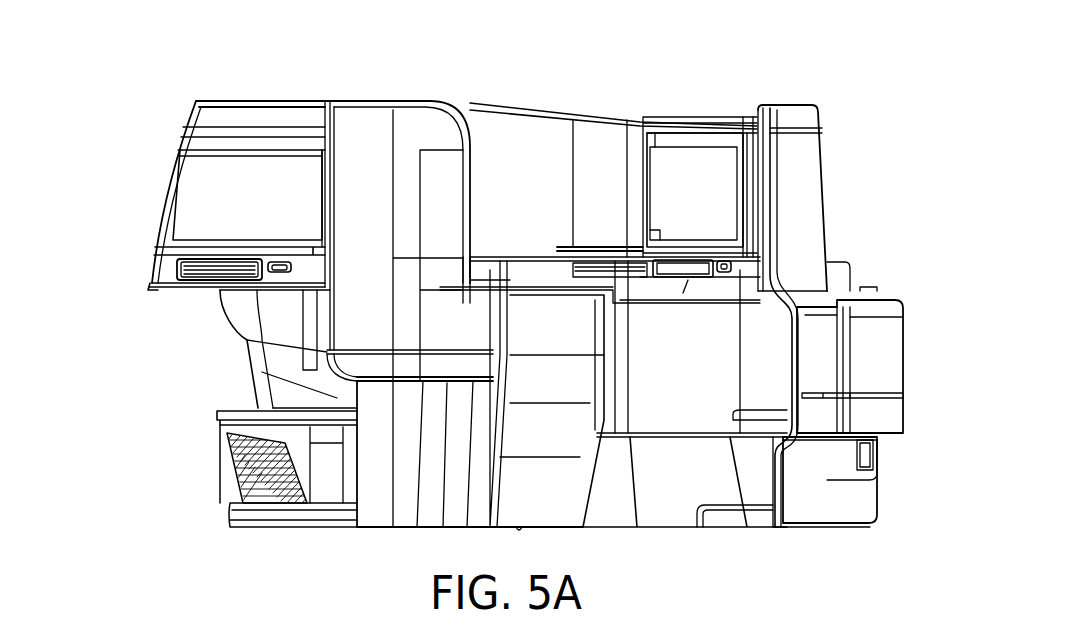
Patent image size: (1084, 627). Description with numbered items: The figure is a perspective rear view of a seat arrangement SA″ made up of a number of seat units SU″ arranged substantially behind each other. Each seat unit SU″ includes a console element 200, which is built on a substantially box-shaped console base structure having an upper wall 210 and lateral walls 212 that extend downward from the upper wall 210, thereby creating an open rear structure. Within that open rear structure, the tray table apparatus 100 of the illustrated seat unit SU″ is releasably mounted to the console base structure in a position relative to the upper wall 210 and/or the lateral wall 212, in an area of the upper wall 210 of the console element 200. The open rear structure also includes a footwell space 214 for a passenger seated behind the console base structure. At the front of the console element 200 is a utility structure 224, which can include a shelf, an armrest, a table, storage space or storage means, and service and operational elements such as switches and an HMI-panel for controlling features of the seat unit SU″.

The tray table apparatus 100 is at (138, 257).
The console element 200 is at (145, 157).
The upper wall 210 is at (294, 253).
The lateral wall 212 is at (317, 287).
The footwell space 214 is at (218, 393).
The front utility structure 224 is at (125, 275).
The seat unit SU is at (685, 57).
The seat arrangement SA is at (883, 90).